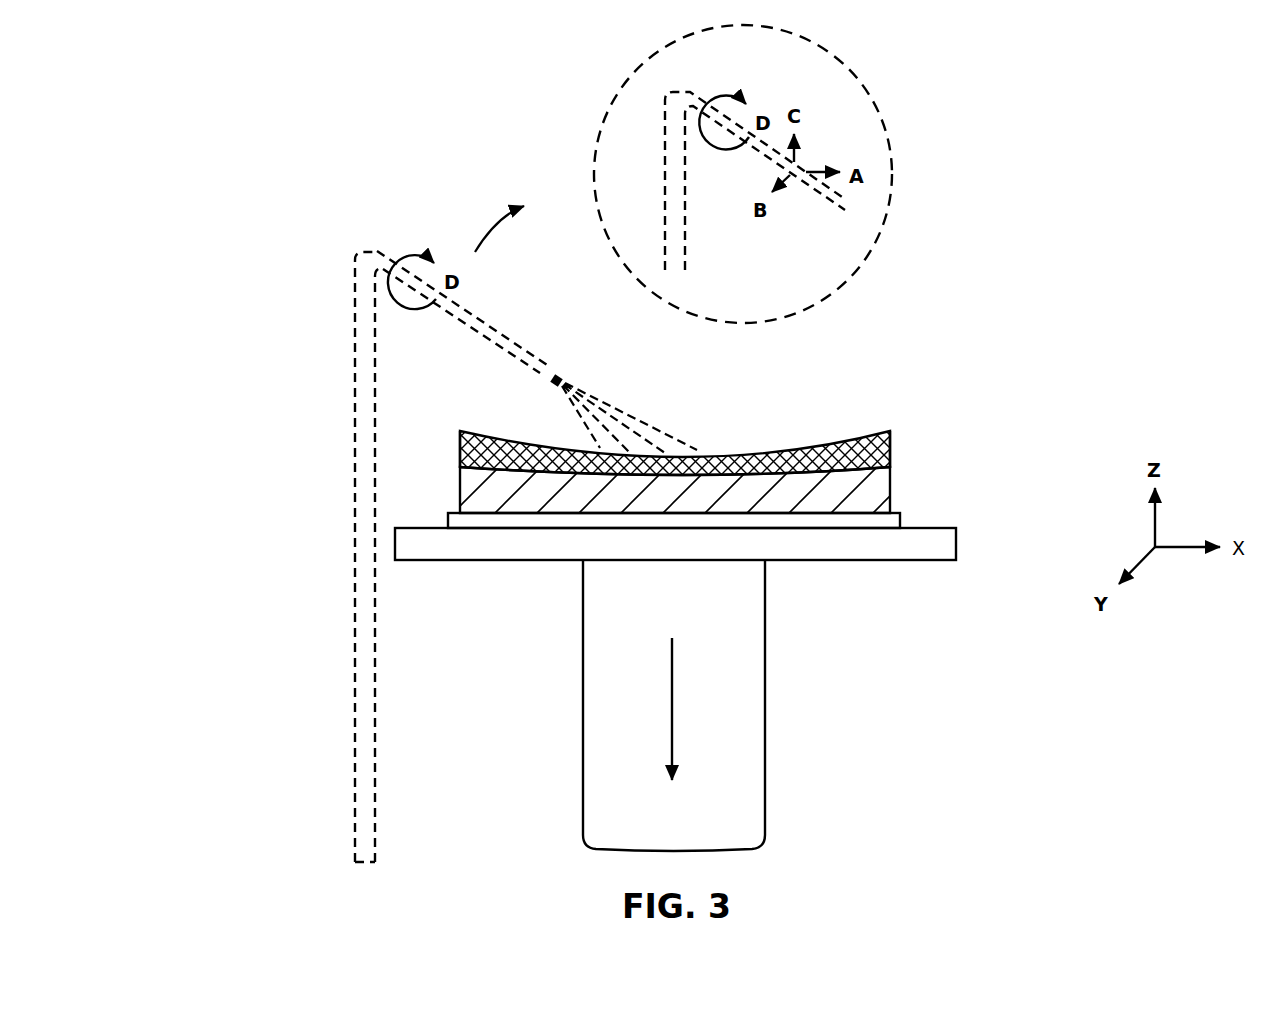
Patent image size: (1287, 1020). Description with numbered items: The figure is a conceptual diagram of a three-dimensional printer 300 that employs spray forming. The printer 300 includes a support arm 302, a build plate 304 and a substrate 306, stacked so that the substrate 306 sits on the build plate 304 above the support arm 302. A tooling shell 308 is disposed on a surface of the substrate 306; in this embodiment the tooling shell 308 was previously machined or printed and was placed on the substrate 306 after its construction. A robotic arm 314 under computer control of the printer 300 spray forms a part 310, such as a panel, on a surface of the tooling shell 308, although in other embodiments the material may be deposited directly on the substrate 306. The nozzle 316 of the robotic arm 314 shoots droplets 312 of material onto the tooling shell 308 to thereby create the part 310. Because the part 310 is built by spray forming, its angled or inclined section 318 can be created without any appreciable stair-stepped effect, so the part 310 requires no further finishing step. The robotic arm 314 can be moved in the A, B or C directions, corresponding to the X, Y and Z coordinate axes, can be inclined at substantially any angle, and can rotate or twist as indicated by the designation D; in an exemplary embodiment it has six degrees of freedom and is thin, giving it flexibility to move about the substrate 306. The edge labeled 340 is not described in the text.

The 3-D printer 300 is at (240, 228).
The support arm 302 is at (766, 690).
The build plate 304 is at (957, 546).
The substrate 306 is at (901, 515).
The tooling shell 308 is at (891, 478).
The part 310 is at (891, 450).
The droplets 312 is at (636, 424).
The robotic arm 314 is at (506, 331).
The nozzle 316 is at (550, 372).
The inclined section 318 is at (463, 431).
The second edge of polishing layer 340 is at (876, 430).